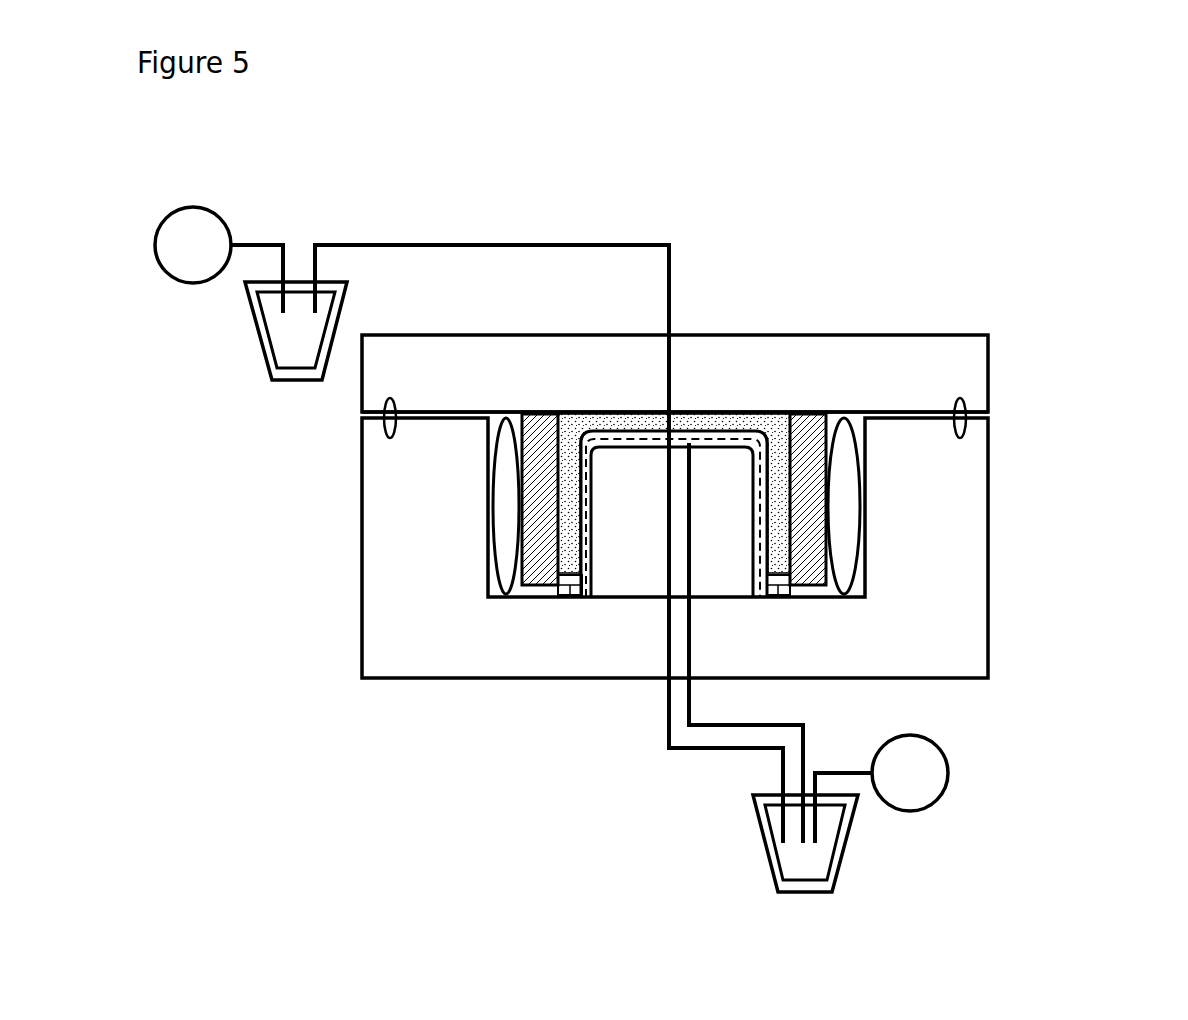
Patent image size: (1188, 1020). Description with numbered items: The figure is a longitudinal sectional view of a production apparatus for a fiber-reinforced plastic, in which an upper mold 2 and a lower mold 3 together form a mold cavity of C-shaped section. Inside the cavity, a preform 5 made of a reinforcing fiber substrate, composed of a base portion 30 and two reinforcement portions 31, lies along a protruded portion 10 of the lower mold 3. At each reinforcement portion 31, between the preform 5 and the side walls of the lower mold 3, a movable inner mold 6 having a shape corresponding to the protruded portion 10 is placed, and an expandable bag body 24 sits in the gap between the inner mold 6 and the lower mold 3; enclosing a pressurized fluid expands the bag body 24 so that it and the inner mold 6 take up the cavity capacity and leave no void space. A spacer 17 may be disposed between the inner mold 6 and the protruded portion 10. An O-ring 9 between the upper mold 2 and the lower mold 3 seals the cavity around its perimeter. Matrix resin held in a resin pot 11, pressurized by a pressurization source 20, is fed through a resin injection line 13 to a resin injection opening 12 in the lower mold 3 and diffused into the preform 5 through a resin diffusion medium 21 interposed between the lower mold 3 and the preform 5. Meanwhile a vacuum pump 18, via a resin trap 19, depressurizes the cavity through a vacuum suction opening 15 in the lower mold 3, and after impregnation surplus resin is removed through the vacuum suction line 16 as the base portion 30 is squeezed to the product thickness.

The upper mold 2 is at (820, 358).
The lower mold 3 is at (978, 597).
The preform 5 is at (558, 414).
The inner mold 6 is at (828, 416).
The O-ring 9 is at (991, 411).
The protruded portion 10 is at (647, 565).
The resin pot 11 is at (825, 828).
The resin injection opening 12 is at (680, 437).
The resin injection line 13 is at (723, 732).
The vacuum suction opening 15 is at (662, 410).
The vacuum suction line 16 is at (450, 243).
The spacer 17 is at (800, 597).
The vacuum pump 18 is at (190, 267).
The resin trap 19 is at (282, 340).
The pressurization source 20 is at (948, 790).
The resin diffusion medium 21 is at (577, 580).
The bag body 24 is at (500, 533).
The base portion 30 is at (700, 430).
The reinforcement portions 31 is at (785, 517).